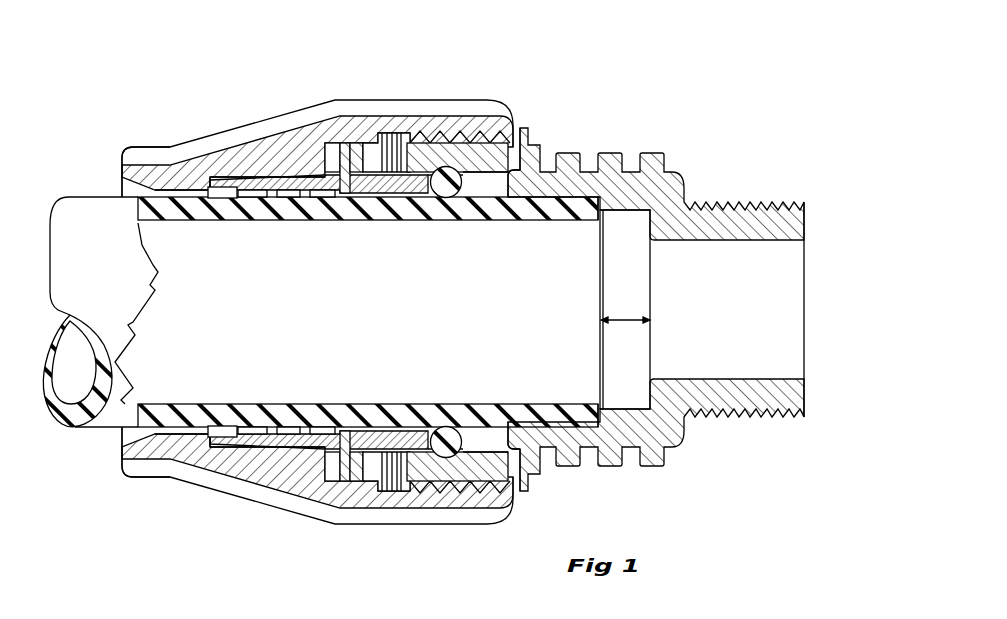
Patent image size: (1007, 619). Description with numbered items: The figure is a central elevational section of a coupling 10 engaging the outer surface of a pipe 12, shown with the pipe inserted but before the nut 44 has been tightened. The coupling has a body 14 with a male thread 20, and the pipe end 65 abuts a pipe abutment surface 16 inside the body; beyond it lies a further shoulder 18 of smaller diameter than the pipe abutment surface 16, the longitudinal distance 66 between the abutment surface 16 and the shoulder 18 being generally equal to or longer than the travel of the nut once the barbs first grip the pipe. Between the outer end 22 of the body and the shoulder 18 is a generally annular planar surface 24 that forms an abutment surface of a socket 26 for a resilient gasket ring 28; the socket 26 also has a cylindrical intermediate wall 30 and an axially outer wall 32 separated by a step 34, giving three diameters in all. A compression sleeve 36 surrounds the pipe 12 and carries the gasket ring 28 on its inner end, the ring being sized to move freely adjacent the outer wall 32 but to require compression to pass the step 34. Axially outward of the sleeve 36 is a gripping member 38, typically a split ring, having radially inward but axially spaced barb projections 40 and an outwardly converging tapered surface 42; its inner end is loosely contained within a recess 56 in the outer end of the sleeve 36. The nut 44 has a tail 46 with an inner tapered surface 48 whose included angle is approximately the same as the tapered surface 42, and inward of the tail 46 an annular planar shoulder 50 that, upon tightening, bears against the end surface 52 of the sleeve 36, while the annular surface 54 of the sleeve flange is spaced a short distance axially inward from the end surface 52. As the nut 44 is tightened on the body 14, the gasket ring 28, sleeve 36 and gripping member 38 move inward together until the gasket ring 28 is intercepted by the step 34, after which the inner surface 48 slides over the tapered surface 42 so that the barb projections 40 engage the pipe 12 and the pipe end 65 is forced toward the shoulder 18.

The coupling 10 is at (503, 309).
The pipe 12 is at (108, 266).
The body 14 is at (686, 125).
The pipe abutment surface 16 is at (592, 207).
The shoulder 18 is at (650, 223).
The male thread 20 is at (535, 135).
The outer end 22 is at (400, 133).
The annular planar surface 24 is at (481, 192).
The socket 26 is at (486, 180).
The resilient gasket ring 28 is at (443, 128).
The intermediate wall 30 is at (427, 452).
The outer wall 32 is at (494, 452).
The step 34 is at (452, 167).
The compression sleeve 36 is at (388, 491).
The gripping member 38 is at (222, 185).
The barb projections 40 is at (265, 430).
The tapered surface 42 is at (298, 462).
The nut 44 is at (503, 309).
The tail 46 is at (162, 172).
The inner tapered surface 48 is at (188, 433).
The annular planar shoulder 50 is at (323, 205).
The end surface 52 is at (329, 160).
The annular surface 54 is at (345, 195).
The recess 56 is at (297, 180).
The pipe end 65 is at (605, 408).
The longitudinal distance 66 is at (627, 320).